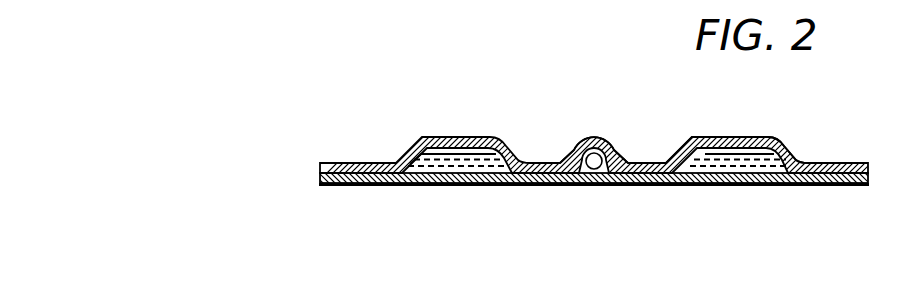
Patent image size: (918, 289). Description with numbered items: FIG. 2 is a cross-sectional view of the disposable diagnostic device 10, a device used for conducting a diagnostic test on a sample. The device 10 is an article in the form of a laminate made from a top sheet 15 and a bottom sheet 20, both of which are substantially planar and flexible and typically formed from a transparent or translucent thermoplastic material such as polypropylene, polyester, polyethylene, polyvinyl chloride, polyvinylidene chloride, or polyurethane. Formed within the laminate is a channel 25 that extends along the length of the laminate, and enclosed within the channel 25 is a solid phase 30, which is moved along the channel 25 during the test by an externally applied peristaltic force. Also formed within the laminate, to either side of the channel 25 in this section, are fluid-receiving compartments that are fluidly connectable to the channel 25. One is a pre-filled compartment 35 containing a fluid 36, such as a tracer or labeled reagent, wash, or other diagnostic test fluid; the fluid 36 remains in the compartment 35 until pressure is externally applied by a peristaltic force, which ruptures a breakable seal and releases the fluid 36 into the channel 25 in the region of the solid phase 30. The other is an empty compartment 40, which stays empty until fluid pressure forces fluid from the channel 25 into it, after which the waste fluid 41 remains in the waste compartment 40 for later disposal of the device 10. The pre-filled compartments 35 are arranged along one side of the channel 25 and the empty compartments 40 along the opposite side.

The disposable diagnostic device 10 is at (421, 75).
The top sheet 15 is at (367, 163).
The bottom sheet 20 is at (711, 178).
The channel 25 is at (587, 128).
The solid phase 30 is at (594, 161).
The pre-filled compartment 35 is at (761, 137).
The fluid 36 is at (758, 166).
The empty compartment 40 is at (415, 166).
The waste fluid 41 is at (473, 166).